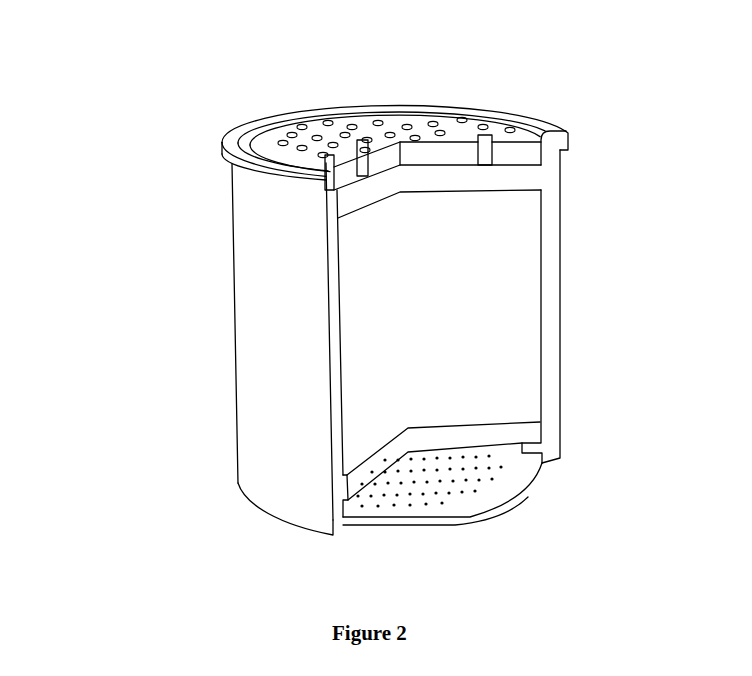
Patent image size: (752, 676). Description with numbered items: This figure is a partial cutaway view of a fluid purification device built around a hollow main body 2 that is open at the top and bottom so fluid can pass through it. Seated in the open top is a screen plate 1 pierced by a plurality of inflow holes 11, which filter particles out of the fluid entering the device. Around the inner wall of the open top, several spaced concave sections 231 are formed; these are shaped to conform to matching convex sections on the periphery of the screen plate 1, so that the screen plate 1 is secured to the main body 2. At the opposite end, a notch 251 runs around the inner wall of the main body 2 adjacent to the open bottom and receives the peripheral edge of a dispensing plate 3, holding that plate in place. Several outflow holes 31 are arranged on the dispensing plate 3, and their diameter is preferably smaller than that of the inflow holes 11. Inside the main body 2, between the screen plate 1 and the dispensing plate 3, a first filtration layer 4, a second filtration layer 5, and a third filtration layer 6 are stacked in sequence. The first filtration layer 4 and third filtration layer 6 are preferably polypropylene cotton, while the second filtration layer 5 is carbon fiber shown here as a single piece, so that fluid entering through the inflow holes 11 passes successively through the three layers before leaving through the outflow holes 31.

The screen plate 1 is at (523, 146).
The inflow holes 11 is at (490, 130).
The main body 2 is at (268, 372).
The concave sections 231 is at (568, 136).
The notch 251 is at (340, 520).
The dispensing plate 3 is at (472, 505).
The outflow holes 31 is at (513, 470).
The first filtration layer 4 is at (507, 172).
The second filtration layer 5 is at (500, 277).
The third filtration layer 6 is at (490, 435).